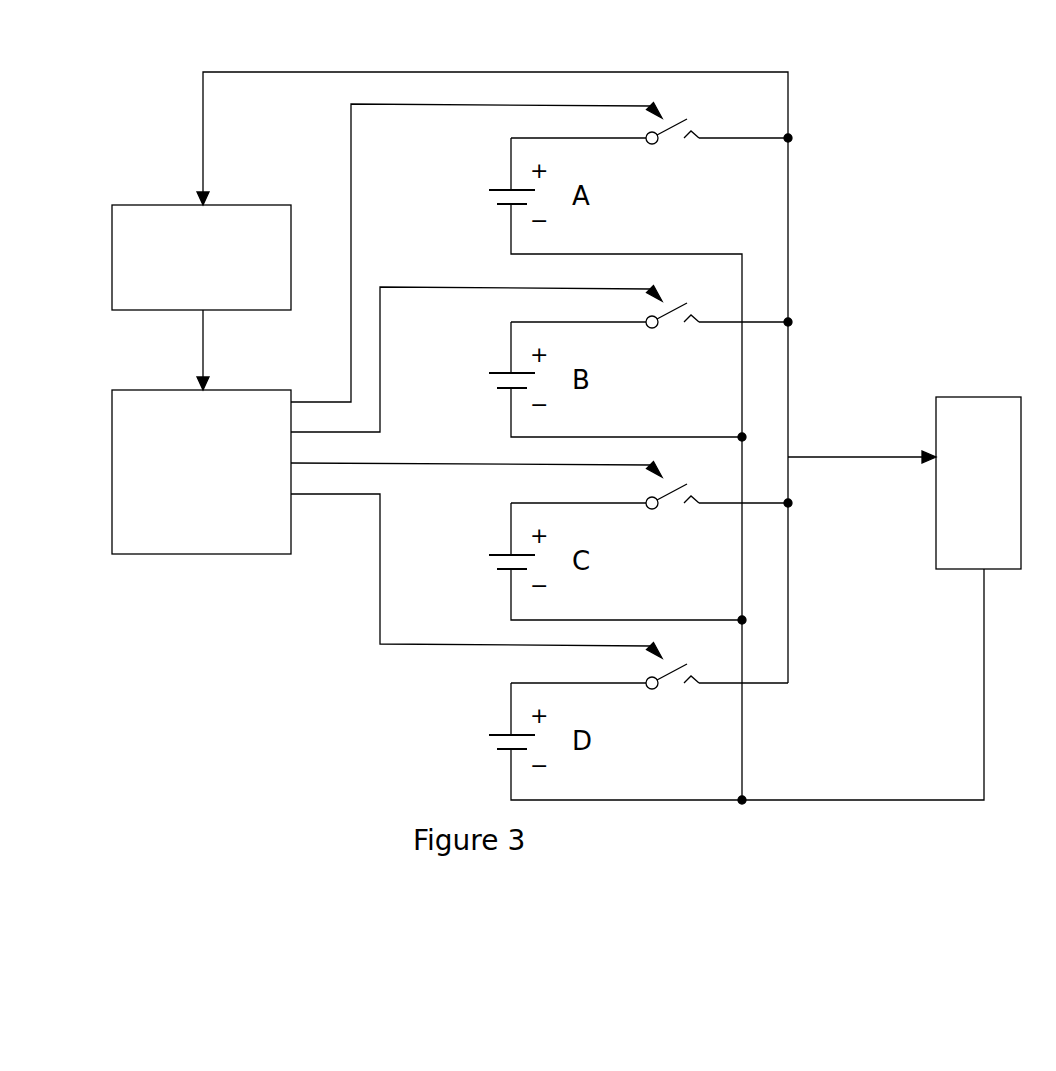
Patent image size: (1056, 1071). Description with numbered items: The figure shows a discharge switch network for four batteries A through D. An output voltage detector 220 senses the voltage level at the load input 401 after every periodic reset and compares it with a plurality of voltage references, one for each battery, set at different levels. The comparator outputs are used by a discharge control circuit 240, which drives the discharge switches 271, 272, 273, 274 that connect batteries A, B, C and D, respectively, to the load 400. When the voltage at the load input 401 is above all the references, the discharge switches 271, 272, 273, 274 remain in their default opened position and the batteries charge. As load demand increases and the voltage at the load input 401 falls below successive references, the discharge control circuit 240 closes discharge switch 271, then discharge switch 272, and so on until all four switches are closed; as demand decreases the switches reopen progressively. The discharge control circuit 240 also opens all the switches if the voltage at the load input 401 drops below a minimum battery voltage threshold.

The output voltage detector 220 is at (170, 205).
The discharge control circuit 240 is at (170, 390).
The discharge switch 271 is at (649, 153).
The discharge switch 272 is at (649, 337).
The discharge switch 273 is at (649, 518).
The discharge switch 274 is at (649, 698).
The load 400 is at (993, 397).
The load input 401 is at (906, 455).